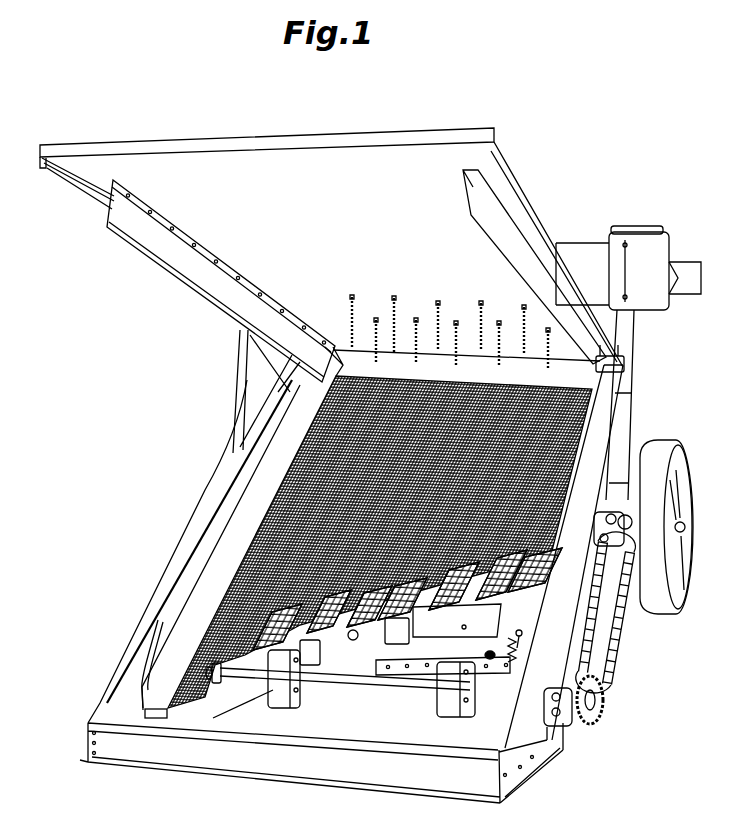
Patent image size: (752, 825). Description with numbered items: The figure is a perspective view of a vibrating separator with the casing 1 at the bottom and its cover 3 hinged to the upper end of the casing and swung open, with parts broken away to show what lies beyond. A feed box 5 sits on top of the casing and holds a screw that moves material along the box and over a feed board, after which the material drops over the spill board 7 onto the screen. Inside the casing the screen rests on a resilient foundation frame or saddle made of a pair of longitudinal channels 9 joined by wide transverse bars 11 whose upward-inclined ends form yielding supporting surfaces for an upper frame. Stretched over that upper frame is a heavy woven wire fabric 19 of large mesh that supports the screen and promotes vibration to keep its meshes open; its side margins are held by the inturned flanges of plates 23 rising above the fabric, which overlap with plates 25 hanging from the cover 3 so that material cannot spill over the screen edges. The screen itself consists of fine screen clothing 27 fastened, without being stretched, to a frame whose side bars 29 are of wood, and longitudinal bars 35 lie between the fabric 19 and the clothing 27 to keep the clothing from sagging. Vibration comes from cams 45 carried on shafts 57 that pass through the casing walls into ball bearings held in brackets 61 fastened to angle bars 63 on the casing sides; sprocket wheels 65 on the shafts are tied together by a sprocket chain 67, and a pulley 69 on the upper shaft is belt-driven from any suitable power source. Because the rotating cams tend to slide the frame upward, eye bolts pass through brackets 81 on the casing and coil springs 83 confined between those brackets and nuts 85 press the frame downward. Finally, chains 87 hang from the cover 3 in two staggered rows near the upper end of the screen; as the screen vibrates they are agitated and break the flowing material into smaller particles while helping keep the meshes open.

The casing 1 is at (607, 437).
The cover 3 is at (418, 150).
The feed box 5 is at (577, 253).
The spill board 7 is at (550, 376).
The longitudinal channels 9 is at (444, 646).
The transverse bars 11 is at (494, 612).
The fabric 19 is at (395, 630).
The plates 23 is at (219, 570).
The plates 25 is at (122, 225).
The screen clothing 27 is at (200, 633).
The side bars 29 is at (170, 705).
The bars 35 is at (481, 600).
The cams 45 is at (283, 680).
The shafts 57 is at (249, 676).
The brackets 61 is at (617, 516).
The angle bars 63 is at (594, 581).
The sprocket wheels 65 is at (596, 678).
The sprocket chain 67 is at (622, 637).
The pulley 69 is at (662, 449).
The brackets 81 is at (523, 632).
The springs 83 is at (491, 654).
The nuts 85 is at (518, 640).
The chains 87 is at (358, 326).